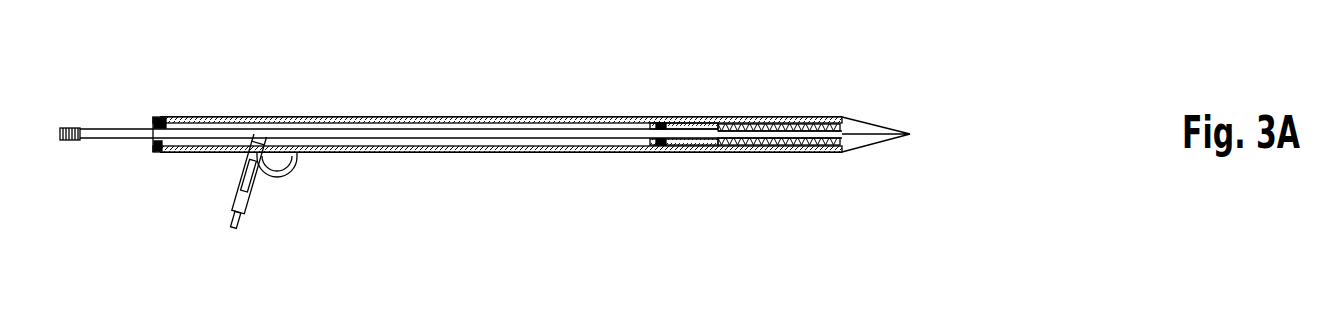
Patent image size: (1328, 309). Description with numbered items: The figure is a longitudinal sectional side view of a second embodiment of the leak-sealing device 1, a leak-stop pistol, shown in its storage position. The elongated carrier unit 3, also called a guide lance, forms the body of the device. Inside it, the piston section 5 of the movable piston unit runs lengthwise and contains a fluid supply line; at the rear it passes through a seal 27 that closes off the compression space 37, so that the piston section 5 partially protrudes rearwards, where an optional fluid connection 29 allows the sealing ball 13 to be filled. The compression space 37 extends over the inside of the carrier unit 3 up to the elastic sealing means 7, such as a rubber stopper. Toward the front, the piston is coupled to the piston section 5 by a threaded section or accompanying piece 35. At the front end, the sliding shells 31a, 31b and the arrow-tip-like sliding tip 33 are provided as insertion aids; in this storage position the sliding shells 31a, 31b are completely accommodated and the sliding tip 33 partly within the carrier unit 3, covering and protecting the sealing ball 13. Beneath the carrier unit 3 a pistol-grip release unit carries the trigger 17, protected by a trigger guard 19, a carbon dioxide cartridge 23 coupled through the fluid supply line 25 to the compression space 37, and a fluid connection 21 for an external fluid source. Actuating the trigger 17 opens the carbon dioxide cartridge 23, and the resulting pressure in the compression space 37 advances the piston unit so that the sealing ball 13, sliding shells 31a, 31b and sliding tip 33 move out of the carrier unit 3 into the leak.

The leak-sealing device 1 is at (572, 78).
The carrier unit 3 is at (460, 117).
The piston section 5 is at (413, 135).
The sealing means 7 is at (648, 150).
The sealing ball 13 is at (802, 150).
The trigger 17 is at (278, 157).
The trigger guard 19 is at (285, 178).
The fluid connection 21 is at (241, 228).
The carbon dioxide cartridge 23 is at (235, 185).
The fluid supply line 25 is at (250, 159).
The seal 27 is at (172, 122).
The fluid connection 29 is at (68, 128).
The sliding shell 31a is at (767, 118).
The sliding shell 31b is at (765, 150).
The sliding tip 33 is at (878, 118).
The threaded section 35 is at (682, 150).
The compression space 37 is at (327, 125).